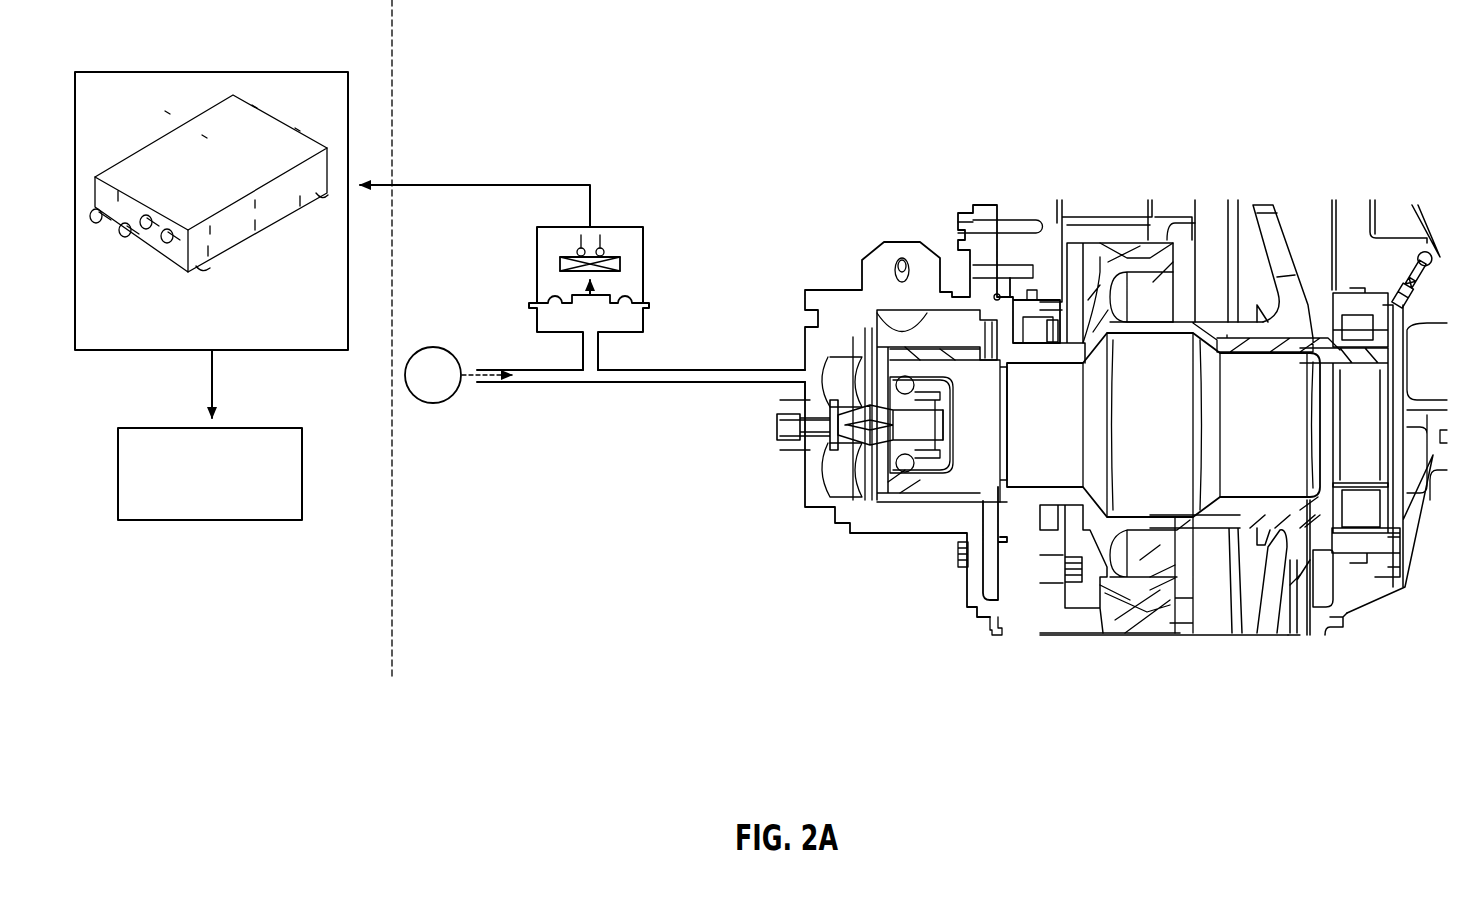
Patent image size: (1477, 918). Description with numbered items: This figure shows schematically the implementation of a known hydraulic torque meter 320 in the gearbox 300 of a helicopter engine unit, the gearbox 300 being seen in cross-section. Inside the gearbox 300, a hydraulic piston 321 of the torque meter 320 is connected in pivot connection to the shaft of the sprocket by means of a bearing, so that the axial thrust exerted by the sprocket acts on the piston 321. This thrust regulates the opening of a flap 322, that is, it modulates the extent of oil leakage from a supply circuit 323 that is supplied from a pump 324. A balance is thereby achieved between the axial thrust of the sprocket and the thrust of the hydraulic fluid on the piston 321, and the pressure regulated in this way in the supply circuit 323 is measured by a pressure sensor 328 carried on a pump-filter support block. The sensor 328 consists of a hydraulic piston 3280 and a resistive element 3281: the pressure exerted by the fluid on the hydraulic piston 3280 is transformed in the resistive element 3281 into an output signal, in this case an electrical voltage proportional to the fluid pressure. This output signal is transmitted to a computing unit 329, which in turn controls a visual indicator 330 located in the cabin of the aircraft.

The gearbox 300 is at (1230, 72).
The hydraulic torque meter 320 is at (645, 660).
The hydraulic piston 321 is at (862, 440).
The flap 322 is at (850, 430).
The supply circuit 323 is at (645, 383).
The pump 324 is at (458, 375).
The pressure sensor 328 is at (632, 244).
The hydraulic piston 3280 is at (633, 296).
The resistive element 3281 is at (610, 262).
The computing unit 329 is at (211, 211).
The visual indicator 330 is at (210, 435).